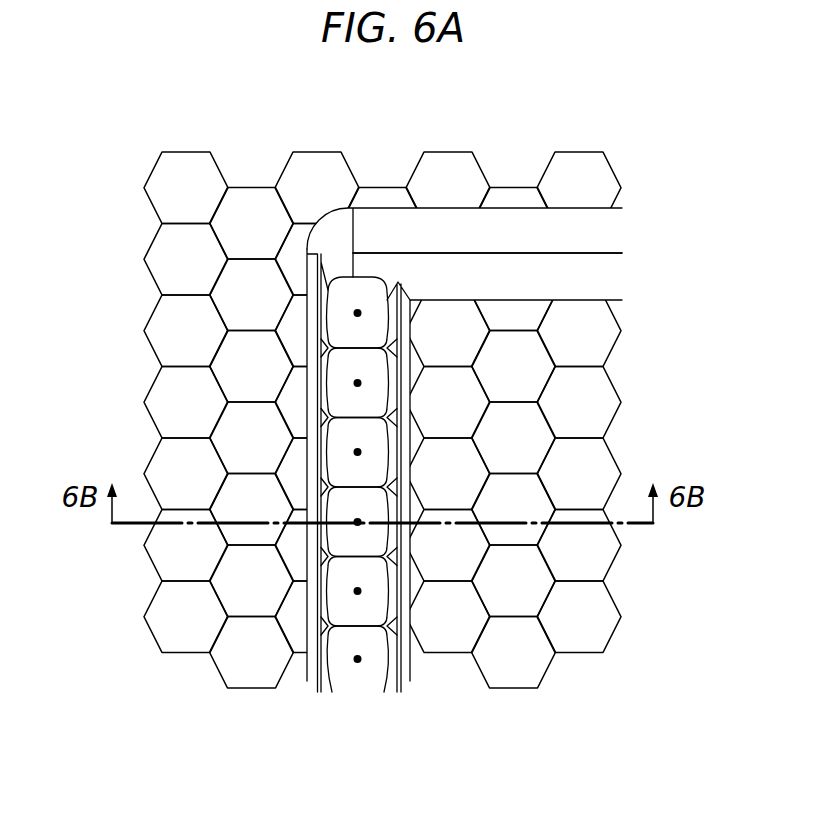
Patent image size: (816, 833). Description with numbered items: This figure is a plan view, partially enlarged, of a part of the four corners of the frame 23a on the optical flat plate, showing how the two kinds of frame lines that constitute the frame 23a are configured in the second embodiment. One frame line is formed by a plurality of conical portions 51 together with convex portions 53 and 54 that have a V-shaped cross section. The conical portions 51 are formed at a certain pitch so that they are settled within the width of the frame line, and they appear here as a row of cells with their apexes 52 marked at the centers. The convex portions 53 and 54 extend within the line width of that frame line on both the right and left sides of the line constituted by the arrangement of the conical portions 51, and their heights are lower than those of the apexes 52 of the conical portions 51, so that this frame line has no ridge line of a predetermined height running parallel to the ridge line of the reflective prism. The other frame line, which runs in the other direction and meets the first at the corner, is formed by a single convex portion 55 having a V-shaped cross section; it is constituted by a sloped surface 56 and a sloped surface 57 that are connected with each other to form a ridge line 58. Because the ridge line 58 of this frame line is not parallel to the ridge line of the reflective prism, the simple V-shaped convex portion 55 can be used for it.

The frame 23a is at (166, 121).
The conical portion 51 is at (373, 367).
The apex 52 is at (362, 383).
The convex portion 53 is at (315, 678).
The convex portion 54 is at (407, 680).
The convex portion 55 is at (432, 228).
The sloped surface 56 is at (508, 217).
The sloped surface 57 is at (546, 274).
The ridge line 58 is at (607, 250).